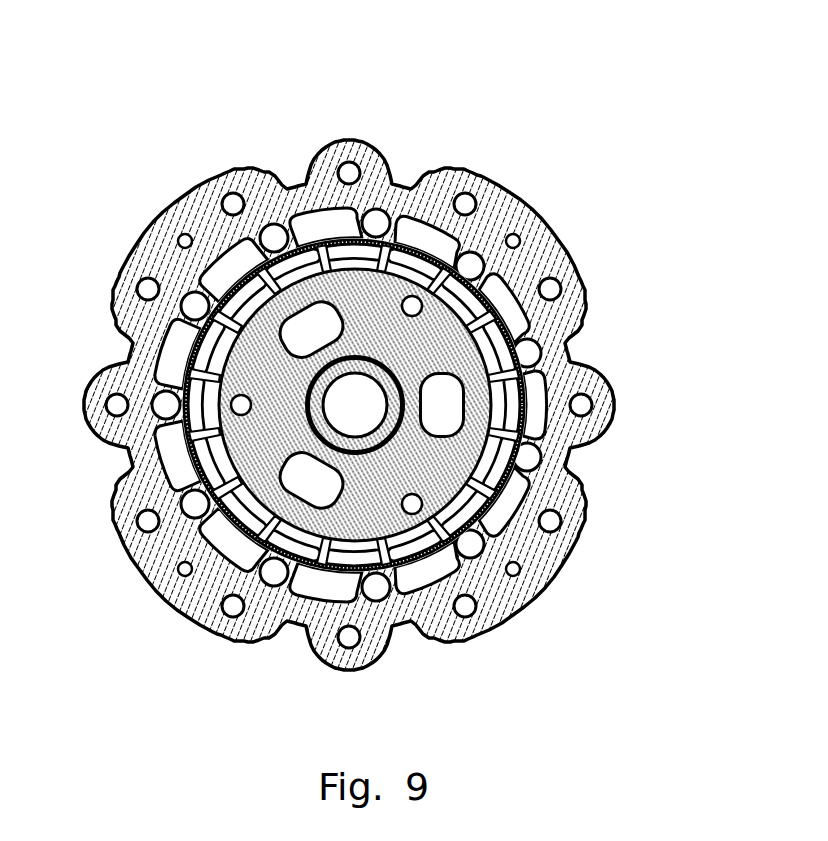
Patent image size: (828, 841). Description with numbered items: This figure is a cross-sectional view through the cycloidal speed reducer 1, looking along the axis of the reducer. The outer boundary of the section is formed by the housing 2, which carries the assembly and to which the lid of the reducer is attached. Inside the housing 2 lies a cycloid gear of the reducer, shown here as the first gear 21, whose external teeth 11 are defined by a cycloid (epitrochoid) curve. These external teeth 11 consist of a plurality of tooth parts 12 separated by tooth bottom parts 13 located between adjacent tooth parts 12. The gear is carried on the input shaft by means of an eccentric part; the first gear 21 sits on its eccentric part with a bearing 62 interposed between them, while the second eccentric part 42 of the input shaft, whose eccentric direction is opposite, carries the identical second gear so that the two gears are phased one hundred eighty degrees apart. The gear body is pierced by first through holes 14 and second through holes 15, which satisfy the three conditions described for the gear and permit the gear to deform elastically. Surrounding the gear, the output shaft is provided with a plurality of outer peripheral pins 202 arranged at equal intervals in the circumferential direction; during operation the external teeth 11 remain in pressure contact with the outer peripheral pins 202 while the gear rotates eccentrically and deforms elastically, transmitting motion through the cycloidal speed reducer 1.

The cycloidal speed reducer 1 is at (332, 80).
The housing 2 is at (616, 398).
The external teeth 11 is at (327, 93).
The tooth parts 12 is at (417, 250).
The tooth bottom parts 13 is at (357, 237).
The first through holes 14 is at (458, 257).
The second through holes 15 is at (479, 247).
The first gear 21 is at (341, 413).
The second eccentric part 42 is at (346, 414).
The bearing 62 is at (323, 382).
The outer peripheral pins 202 is at (379, 220).